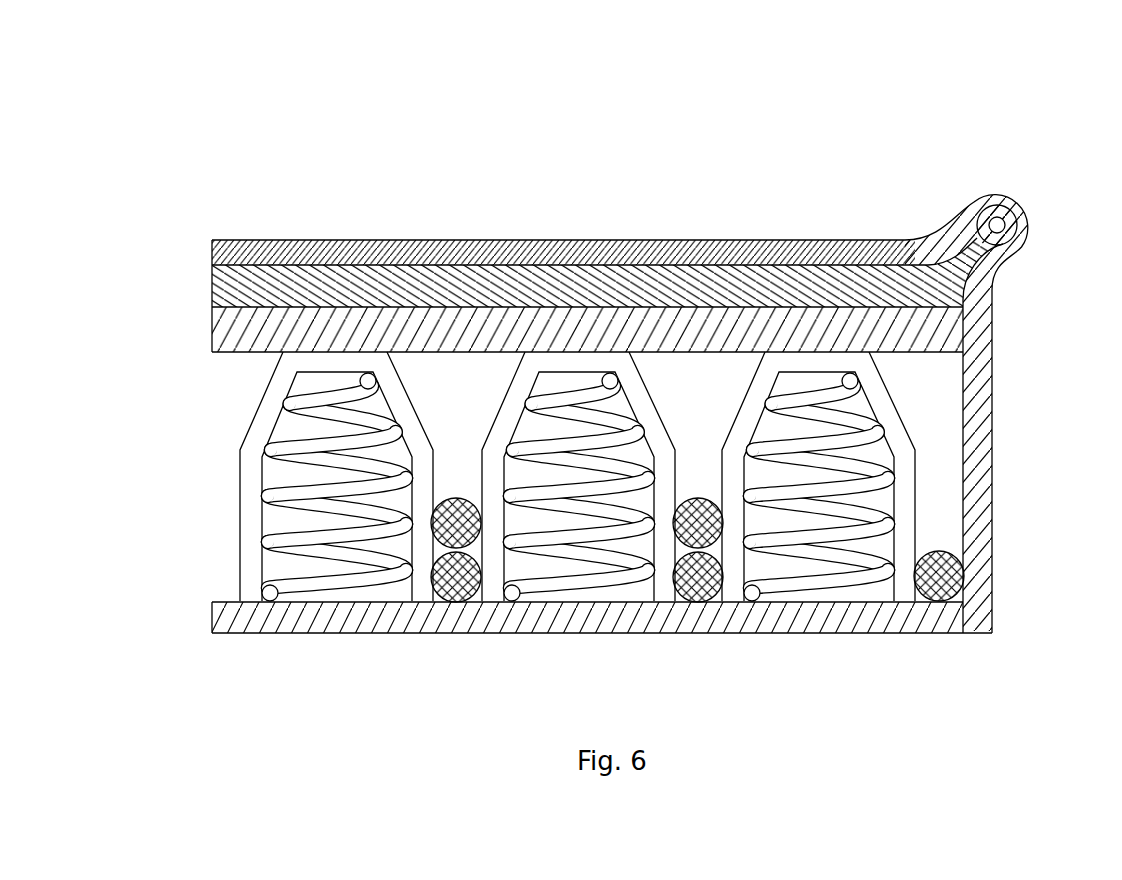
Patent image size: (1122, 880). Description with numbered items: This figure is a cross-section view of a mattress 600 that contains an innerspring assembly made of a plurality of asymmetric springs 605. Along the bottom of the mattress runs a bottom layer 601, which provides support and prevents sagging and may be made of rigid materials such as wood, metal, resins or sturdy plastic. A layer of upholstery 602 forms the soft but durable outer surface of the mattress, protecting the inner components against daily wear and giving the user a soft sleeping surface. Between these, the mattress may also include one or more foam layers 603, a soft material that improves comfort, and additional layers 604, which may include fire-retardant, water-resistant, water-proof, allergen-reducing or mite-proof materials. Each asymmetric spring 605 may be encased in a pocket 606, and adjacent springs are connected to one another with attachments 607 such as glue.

The mattress 600 is at (1003, 146).
The bottom layer 601 is at (718, 633).
The upholstery layer 602 is at (992, 448).
The foam layer 603 is at (213, 290).
The additional layers 604 is at (215, 333).
The asymmetric spring 605 is at (347, 602).
The pocket 606 is at (243, 543).
The attachments 607 is at (472, 602).